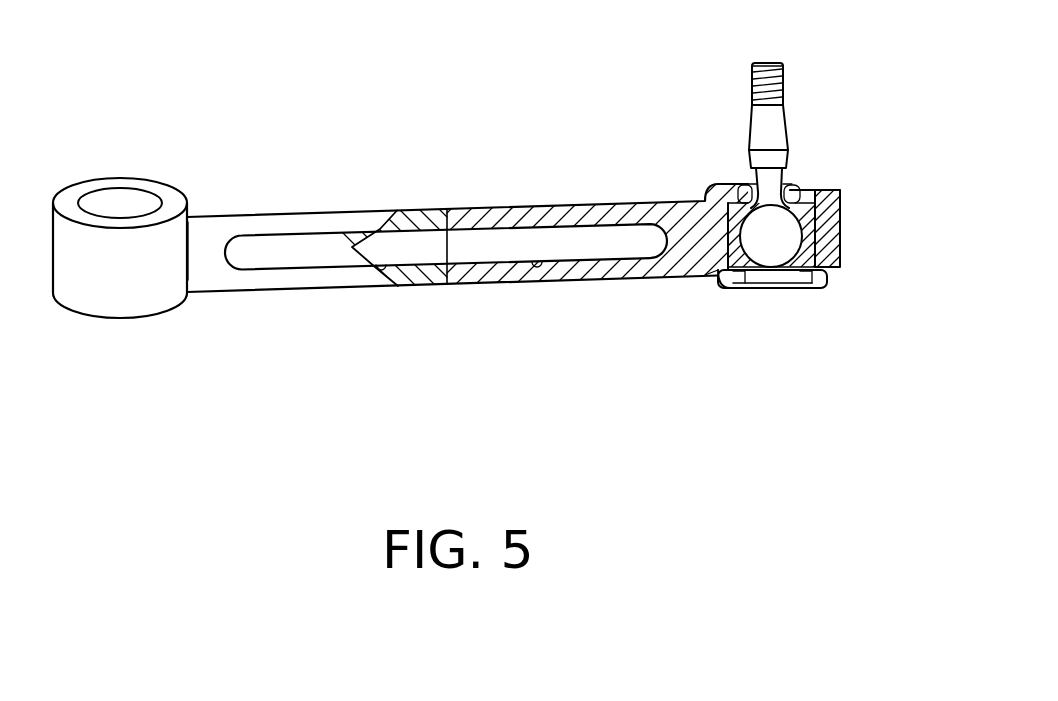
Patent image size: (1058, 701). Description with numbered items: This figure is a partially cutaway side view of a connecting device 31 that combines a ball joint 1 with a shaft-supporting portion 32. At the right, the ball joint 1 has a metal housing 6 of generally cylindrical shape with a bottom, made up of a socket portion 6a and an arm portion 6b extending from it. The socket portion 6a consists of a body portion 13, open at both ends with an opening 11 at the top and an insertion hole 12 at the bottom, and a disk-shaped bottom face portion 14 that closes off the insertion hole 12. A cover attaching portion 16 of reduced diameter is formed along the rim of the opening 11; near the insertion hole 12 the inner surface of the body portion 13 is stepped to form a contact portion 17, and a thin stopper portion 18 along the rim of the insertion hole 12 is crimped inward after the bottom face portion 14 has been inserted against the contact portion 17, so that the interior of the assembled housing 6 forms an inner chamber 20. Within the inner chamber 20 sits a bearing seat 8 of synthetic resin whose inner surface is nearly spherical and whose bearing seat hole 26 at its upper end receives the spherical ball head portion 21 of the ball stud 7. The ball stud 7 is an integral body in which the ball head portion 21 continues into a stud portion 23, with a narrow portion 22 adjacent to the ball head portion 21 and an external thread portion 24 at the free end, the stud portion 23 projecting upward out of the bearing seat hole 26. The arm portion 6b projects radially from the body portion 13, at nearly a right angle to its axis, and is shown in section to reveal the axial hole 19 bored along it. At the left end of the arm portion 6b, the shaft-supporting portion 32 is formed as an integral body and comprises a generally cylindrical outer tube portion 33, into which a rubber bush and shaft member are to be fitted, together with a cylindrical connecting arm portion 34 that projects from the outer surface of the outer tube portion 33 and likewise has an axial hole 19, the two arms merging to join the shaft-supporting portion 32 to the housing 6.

The ball joint 1 is at (673, 300).
The housing 6 is at (838, 254).
The socket portion 6a is at (845, 266).
The arm portion 6b is at (573, 205).
The ball stud 7 is at (789, 128).
The bearing seat 8 is at (832, 212).
The opening 11 is at (797, 187).
The insertion hole 12 is at (797, 277).
The body portion 13 is at (830, 233).
The bottom face portion 14 is at (752, 288).
The cover attaching portion 16 is at (808, 190).
The contact portion 17 is at (807, 280).
The stopper portion 18 is at (803, 277).
The axial hole 19 is at (373, 265).
The inner chamber 20 is at (717, 279).
The ball head portion 21 is at (757, 242).
The narrow portion 22 is at (745, 184).
The stud portion 23 is at (748, 133).
The external thread portion 24 is at (786, 84).
The bearing seat hole 26 is at (842, 191).
The connecting device 31 is at (428, 63).
The shaft-supporting portion 32 is at (178, 325).
The outer tube portion 33 is at (101, 305).
The connecting arm portion 34 is at (288, 212).